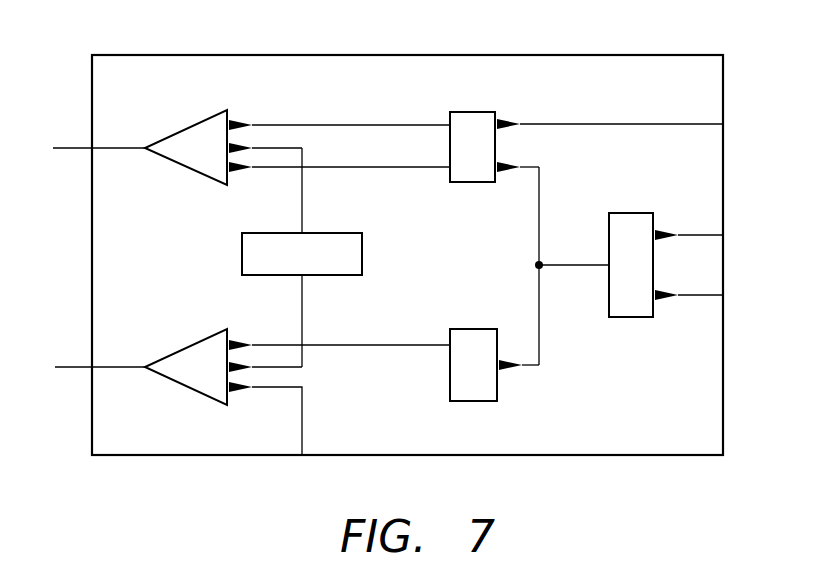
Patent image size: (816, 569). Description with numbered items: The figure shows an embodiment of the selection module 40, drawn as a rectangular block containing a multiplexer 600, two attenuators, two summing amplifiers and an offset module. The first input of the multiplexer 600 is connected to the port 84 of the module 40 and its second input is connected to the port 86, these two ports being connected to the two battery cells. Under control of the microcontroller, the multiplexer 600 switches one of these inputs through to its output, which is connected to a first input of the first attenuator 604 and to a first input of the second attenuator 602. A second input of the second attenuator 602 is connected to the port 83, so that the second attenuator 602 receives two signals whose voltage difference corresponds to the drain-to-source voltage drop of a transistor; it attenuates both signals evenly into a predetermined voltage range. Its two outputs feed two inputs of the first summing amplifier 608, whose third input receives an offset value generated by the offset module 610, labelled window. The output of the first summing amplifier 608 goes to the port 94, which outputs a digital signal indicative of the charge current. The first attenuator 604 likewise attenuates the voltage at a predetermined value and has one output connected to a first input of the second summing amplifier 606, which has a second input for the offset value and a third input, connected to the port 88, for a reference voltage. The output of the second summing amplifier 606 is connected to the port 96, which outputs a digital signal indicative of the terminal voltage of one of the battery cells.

The module 40 is at (582, 55).
The port 83 is at (723, 124).
The port 84 is at (723, 235).
The port 86 is at (723, 295).
The port 88 is at (302, 458).
The port 94 is at (90, 150).
The port 96 is at (90, 370).
The multiplexer 600 is at (631, 212).
The second attenuator 602 is at (467, 110).
The first attenuator 604 is at (480, 402).
The second summing amplifier 606 is at (203, 337).
The first summing amplifier 608 is at (190, 176).
The offset module 610 is at (328, 233).